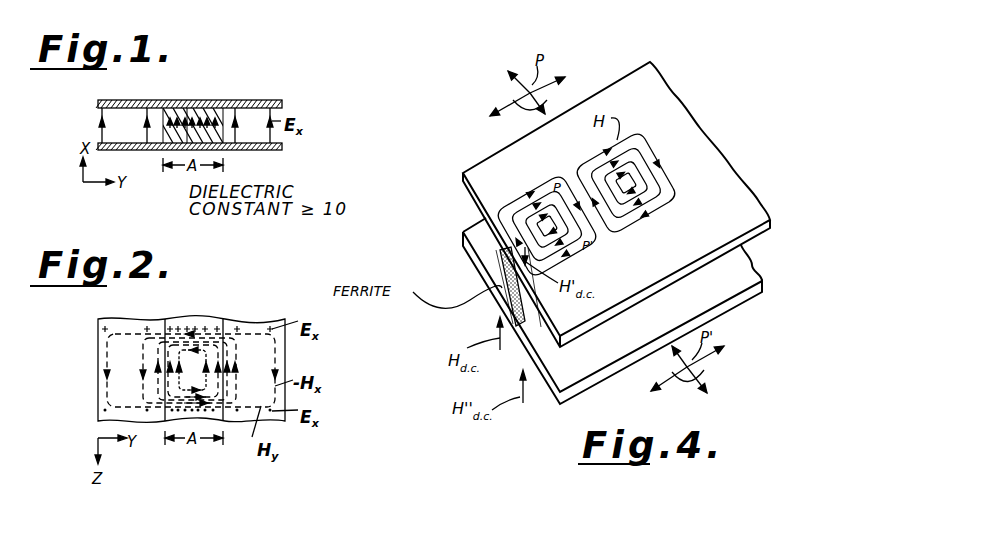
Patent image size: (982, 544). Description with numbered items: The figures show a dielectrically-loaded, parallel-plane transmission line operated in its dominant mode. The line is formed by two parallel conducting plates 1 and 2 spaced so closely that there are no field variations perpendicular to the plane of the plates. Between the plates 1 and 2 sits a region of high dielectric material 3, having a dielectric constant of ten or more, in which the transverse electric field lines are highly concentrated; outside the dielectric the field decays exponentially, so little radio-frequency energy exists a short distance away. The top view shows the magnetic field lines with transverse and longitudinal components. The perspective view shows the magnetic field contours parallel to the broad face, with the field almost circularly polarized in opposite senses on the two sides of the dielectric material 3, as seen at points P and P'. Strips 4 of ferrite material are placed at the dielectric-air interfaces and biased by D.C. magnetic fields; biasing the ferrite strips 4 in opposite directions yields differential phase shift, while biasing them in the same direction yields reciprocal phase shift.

In FIG. 1, the parallel conducting plate 1 is at (143, 100).
In FIG. 4, the parallel conducting plate 1 is at (486, 160).
In FIG. 1, the parallel conducting plate 2 is at (261, 150).
In FIG. 4, the parallel conducting plate 2 is at (488, 252).
In FIG. 1, the high dielectric material 3 is at (240, 178).
In FIG. 4, the high dielectric material 3 is at (508, 303).
In FIG. 4, the ferrite strip 4 is at (502, 288).